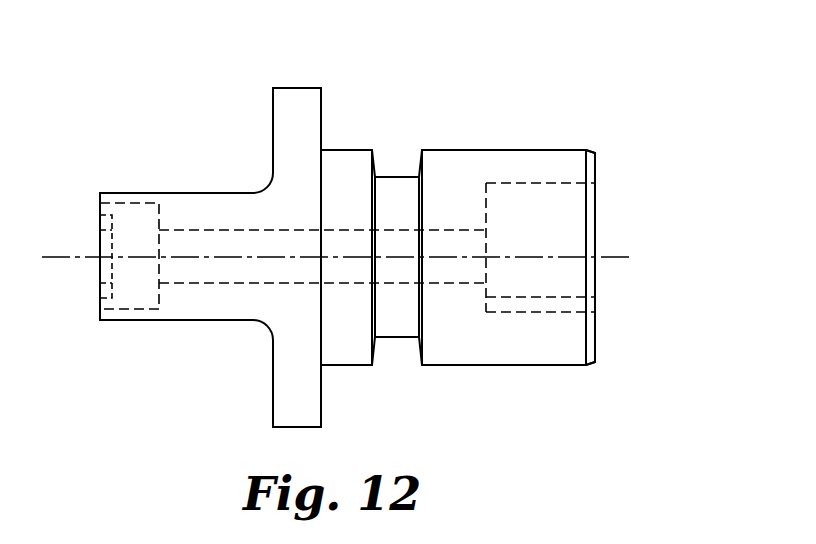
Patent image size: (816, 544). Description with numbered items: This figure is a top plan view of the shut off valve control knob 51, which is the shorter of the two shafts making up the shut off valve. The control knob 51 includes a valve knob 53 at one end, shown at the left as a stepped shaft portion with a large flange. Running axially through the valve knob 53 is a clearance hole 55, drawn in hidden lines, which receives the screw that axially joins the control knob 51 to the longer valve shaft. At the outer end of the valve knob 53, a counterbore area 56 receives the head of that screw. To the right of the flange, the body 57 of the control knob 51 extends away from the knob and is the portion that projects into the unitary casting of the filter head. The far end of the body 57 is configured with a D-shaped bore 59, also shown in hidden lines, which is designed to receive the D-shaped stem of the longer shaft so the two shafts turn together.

The shut off valve control knob 51 is at (403, 129).
The valve knob 53 is at (205, 298).
The clearance hole 55 is at (228, 245).
The counterbore area 56 is at (130, 276).
The body 57 is at (522, 335).
The D-shaped bore 59 is at (531, 227).